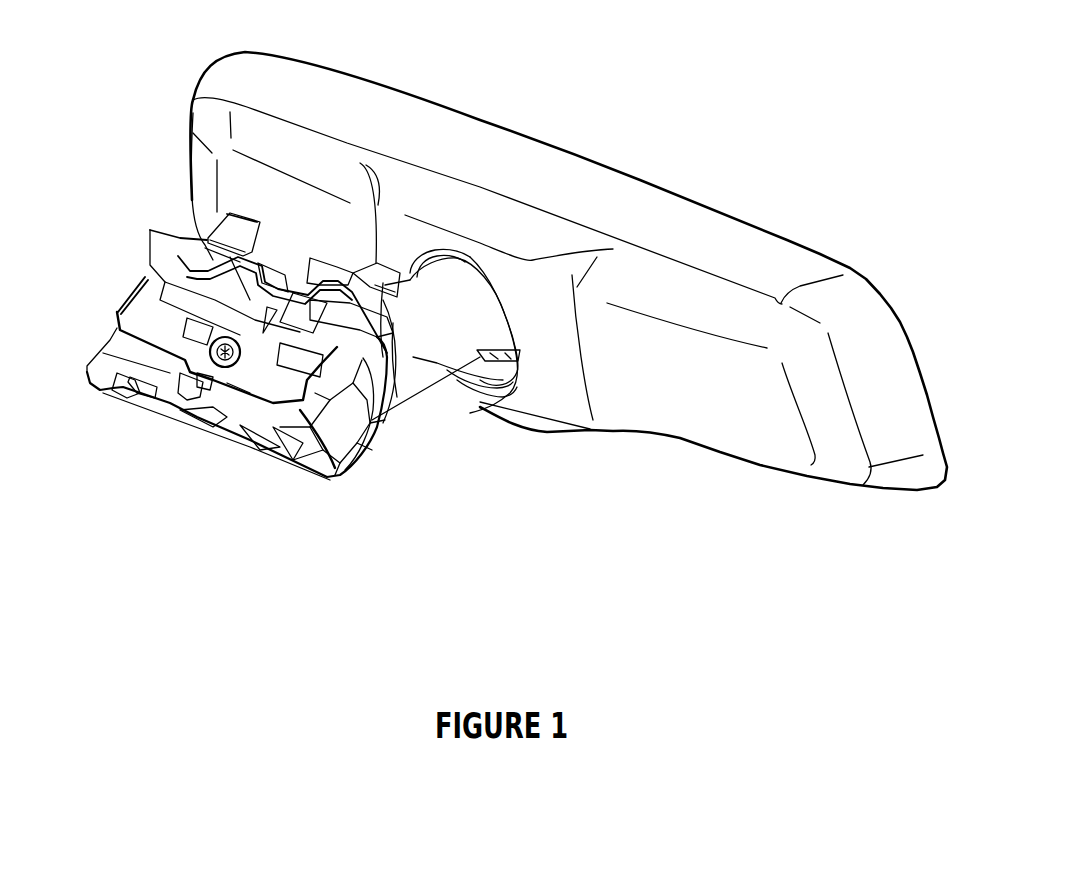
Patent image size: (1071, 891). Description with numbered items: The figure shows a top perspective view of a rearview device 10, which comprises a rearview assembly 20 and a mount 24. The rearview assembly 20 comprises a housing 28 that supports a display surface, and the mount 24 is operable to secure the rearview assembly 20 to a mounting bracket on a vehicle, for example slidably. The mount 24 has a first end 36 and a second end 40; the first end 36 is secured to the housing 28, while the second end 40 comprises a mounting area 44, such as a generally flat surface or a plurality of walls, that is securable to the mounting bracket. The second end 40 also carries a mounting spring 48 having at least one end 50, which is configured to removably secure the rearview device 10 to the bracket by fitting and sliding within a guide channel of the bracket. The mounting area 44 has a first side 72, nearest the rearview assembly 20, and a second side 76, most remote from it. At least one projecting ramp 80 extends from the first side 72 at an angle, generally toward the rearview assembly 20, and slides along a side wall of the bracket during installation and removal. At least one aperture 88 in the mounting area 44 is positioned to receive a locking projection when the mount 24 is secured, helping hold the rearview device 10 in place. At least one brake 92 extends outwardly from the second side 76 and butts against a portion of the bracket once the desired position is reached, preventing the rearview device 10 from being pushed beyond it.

The rearview device 10 is at (680, 130).
The rearview assembly 20 is at (777, 253).
The mount 24 is at (447, 367).
The housing 28 is at (747, 430).
The first end 36 is at (483, 350).
The second end 40 is at (270, 460).
The mounting area 44 is at (175, 283).
The mounting spring 48 is at (137, 307).
The end 50 is at (117, 323).
The first side 72 is at (258, 265).
The second side 76 is at (153, 400).
The projecting ramp 80 is at (222, 212).
The aperture 88 is at (217, 273).
The brake 92 is at (120, 383).